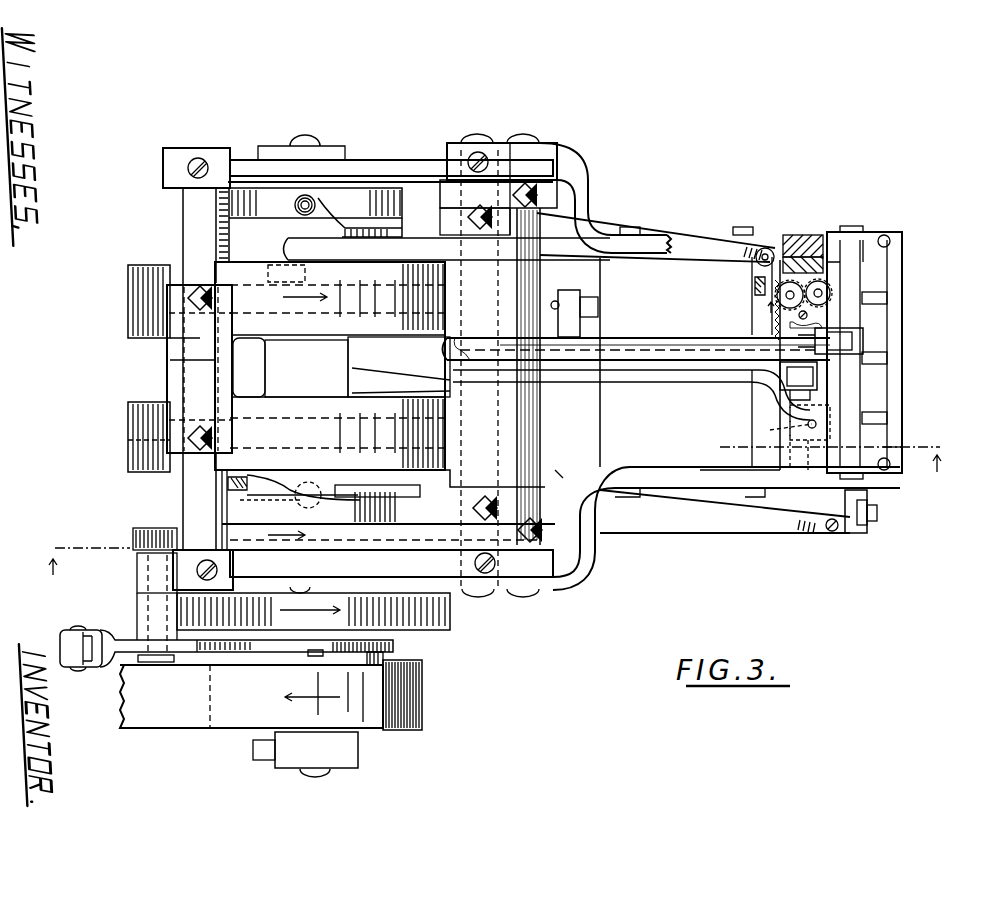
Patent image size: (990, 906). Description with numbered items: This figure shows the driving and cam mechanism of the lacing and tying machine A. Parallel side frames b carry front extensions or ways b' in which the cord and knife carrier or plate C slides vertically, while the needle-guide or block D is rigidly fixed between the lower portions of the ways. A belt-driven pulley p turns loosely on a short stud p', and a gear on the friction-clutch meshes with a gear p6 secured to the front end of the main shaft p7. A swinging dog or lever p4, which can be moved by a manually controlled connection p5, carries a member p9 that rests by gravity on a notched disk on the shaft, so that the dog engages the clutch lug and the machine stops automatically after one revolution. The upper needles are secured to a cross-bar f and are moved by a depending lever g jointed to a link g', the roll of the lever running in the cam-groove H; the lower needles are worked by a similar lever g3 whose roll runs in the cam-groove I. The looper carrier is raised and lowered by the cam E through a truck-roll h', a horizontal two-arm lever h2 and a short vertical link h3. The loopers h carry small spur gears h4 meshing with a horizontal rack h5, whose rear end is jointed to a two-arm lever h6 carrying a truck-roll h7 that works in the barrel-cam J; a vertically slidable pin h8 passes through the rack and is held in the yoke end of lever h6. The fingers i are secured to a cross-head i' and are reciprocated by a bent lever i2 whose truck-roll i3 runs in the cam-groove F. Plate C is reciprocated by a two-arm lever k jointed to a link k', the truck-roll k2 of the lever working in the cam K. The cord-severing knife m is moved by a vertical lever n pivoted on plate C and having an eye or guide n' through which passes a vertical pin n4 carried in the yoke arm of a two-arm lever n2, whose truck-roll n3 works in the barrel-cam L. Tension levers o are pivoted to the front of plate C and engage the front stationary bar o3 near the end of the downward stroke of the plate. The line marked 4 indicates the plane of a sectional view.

The machine for lacing and tying shoe-uppers A is at (531, 338).
The side frames b is at (368, 363).
The ways or front extensions b' is at (690, 463).
The short stud or shaft p' is at (333, 441).
The barrel-cam J is at (245, 205).
The truck-roll h7 is at (300, 200).
The swinging two-arm lever k is at (497, 273).
The truck-roll k2 is at (280, 280).
The link k' is at (870, 336).
The swinging depending lever g is at (266, 366).
The link g' is at (399, 367).
The swinging lever g3 is at (155, 352).
The cam K is at (140, 274).
The cam-groove I is at (132, 325).
The cam E is at (135, 462).
The cam-groove H is at (130, 418).
The truck-roll h' is at (383, 464).
The truck-roll n3 is at (300, 492).
The barrel-cam L is at (232, 498).
The truck-roll i3 is at (432, 560).
The cam-groove F is at (133, 540).
The section line 4- 4 is at (492, 506).
The swinging dog or lever p4 is at (124, 648).
The manually controlled connection p5 is at (78, 648).
The gear p6 is at (420, 628).
The member of the lever p9 is at (246, 656).
The belt-driven pulley p is at (283, 709).
The main shaft p7 is at (318, 656).
The swinging two-arm lever h6 is at (606, 226).
The horizontal two-arm pivoted lever h2 is at (700, 396).
The two-arm swinging bent lever i2 is at (648, 348).
The horizontal cross-bar f is at (573, 432).
The needle-guide or block D is at (690, 363).
The vertically slidable pin h8 is at (792, 231).
The small spur gear h4 is at (820, 290).
The loopers h is at (845, 264).
The rack member h5 is at (772, 304).
The cord and knife carrier C is at (858, 258).
The tension or cord-controlling levers o is at (888, 298).
The front stationary bar o3 is at (893, 447).
The fingers i is at (838, 382).
The cross-head i' is at (770, 434).
The short vertical link h3 is at (800, 378).
The swinging two-arm lever n2 is at (683, 520).
The cord-severing knife m is at (845, 496).
The eye or guide n' is at (856, 536).
The swinging lever n is at (885, 529).
The vertical pin n4 is at (832, 532).